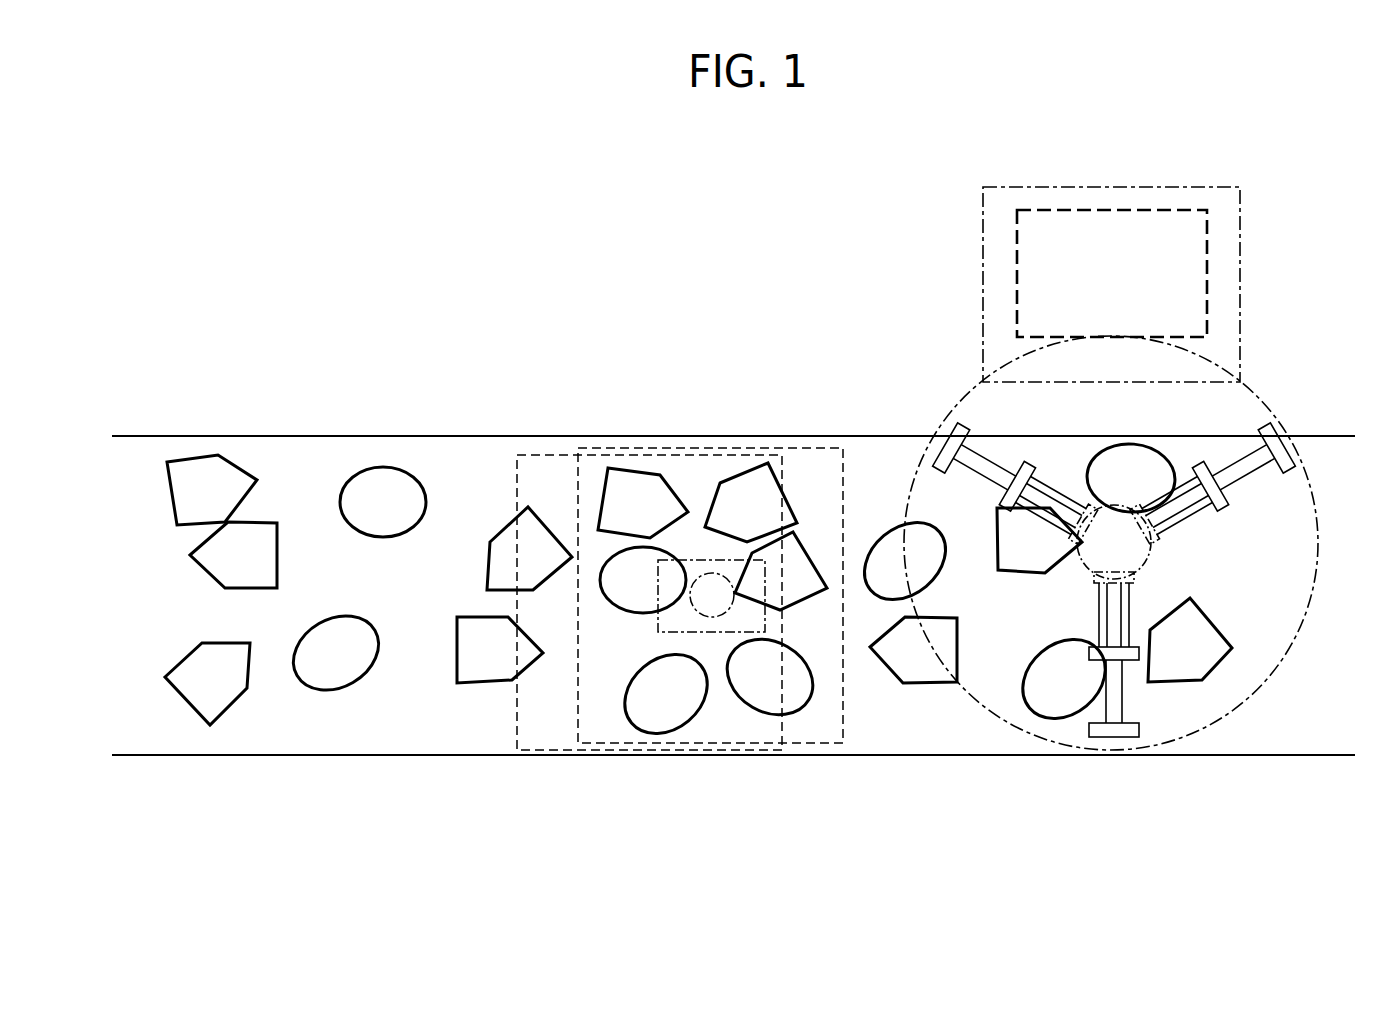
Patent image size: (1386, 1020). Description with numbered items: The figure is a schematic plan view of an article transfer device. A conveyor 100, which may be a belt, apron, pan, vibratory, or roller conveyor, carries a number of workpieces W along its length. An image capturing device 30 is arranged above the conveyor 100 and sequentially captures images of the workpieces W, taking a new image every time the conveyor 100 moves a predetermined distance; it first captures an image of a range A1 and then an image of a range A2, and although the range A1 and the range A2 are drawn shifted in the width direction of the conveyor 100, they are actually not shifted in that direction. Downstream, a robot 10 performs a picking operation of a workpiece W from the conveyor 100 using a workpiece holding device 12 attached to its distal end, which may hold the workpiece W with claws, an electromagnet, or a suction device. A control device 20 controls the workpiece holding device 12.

The conveyor 100 is at (143, 435).
The workpiece W is at (203, 452).
The range A1 is at (845, 718).
The range A2 is at (540, 455).
The image capturing device 30 is at (698, 560).
The robot 10 is at (1115, 536).
The workpiece holding device 12 is at (1148, 546).
The control device 20 is at (1097, 210).